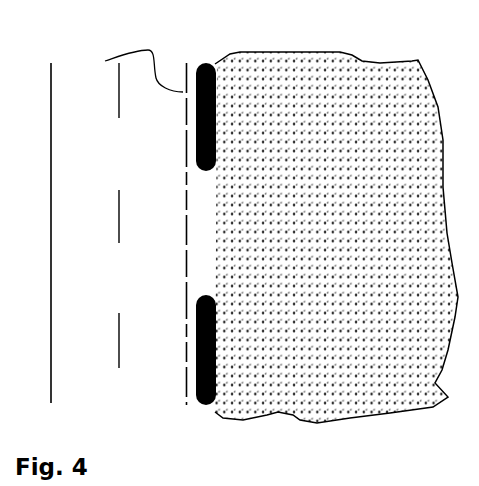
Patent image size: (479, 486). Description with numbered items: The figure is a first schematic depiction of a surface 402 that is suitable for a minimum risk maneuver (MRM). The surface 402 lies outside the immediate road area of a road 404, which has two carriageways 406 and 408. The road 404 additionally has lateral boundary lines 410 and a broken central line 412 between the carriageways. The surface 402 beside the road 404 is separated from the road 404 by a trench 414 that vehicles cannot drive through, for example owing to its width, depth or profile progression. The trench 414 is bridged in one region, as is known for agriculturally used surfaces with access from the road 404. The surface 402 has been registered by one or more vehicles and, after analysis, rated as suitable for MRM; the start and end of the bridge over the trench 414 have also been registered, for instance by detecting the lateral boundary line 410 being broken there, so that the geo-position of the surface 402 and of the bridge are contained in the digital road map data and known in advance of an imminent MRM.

The surface 402 is at (336, 237).
The road 404 is at (93, 246).
The carriageway 406 is at (95, 215).
The carriageway 408 is at (146, 227).
The lateral boundary line 410 is at (55, 97).
The broken central line 412 is at (115, 218).
The trench 414 is at (206, 62).